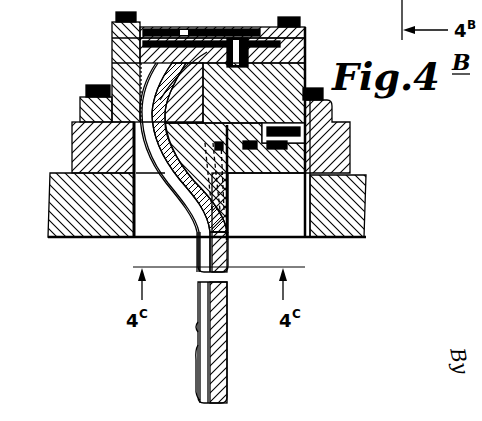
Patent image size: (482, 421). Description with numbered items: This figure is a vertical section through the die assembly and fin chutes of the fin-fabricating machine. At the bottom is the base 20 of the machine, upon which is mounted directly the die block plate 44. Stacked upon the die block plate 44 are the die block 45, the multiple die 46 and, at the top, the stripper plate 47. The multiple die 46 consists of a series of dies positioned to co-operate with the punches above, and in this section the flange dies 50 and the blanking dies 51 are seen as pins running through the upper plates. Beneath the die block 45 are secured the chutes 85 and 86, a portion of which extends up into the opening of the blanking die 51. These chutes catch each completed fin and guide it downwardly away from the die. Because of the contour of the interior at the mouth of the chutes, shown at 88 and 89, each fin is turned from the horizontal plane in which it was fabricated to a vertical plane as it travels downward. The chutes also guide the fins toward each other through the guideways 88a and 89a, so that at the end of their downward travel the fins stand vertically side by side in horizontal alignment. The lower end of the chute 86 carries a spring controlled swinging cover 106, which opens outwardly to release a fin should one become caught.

The base 20 is at (353, 197).
The die block plate 44 is at (343, 153).
The die block 45 is at (287, 78).
The multiple die 46 is at (300, 53).
The stripper plate 47 is at (305, 33).
The flange dies 50 is at (228, 30).
The blanking dies 51 is at (144, 30).
The chute 85 is at (230, 207).
The chute 86 is at (197, 253).
The interior contour at chute mouth 88 is at (150, 60).
The guideway 88a is at (174, 186).
The interior contour at chute mouth 89 is at (217, 27).
The guideway 89a is at (231, 180).
The swinging cover 106 is at (198, 394).